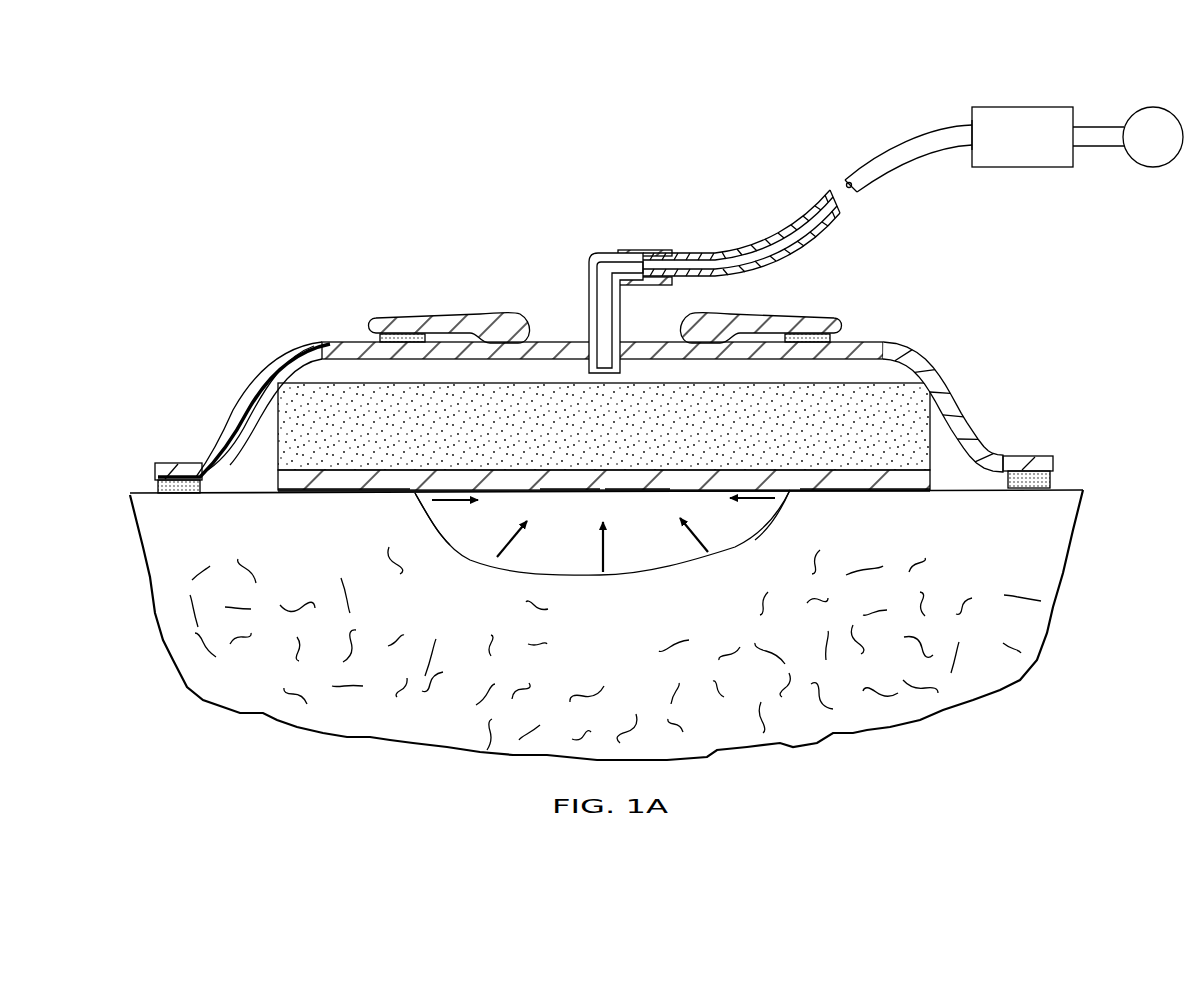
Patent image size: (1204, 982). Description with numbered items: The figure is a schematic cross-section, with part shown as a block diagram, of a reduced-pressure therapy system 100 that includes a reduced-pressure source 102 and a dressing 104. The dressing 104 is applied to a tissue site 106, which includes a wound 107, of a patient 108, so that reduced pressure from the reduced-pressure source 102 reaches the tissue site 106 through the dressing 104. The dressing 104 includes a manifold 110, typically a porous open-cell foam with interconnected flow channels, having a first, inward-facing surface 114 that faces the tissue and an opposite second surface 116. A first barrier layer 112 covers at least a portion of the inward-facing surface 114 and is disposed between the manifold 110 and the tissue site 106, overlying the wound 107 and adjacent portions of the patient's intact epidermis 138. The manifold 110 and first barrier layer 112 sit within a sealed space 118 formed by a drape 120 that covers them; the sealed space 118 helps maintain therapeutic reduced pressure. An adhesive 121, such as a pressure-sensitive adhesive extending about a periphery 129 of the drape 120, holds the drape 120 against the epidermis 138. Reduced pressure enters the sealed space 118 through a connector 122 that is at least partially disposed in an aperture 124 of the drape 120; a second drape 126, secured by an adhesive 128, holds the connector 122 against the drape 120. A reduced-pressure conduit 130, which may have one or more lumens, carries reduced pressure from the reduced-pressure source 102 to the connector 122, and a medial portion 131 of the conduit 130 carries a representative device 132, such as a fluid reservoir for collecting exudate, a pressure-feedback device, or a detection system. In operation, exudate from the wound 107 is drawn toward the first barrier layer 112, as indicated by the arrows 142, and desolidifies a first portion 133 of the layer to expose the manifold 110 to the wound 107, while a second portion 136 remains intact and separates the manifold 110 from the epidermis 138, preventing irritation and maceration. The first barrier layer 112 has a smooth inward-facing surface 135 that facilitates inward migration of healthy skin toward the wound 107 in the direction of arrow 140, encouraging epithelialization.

The reduced-pressure therapy system 100 is at (538, 136).
The reduced-pressure source 102 is at (1152, 107).
The dressing 104 is at (270, 292).
The tissue site 106 is at (589, 675).
The wound 107 is at (573, 582).
The patient 108 is at (1060, 490).
The manifold 110 is at (582, 430).
The first barrier layer 112 is at (278, 492).
The first, inward-facing surface 114 is at (350, 495).
The second surface 116 is at (292, 380).
The sealed space 118 is at (258, 418).
The drape 120 is at (955, 385).
The adhesive 121 is at (183, 493).
The connector 122 is at (602, 252).
The aperture 124 is at (632, 368).
The second drape 126 is at (432, 318).
The adhesive 128 is at (383, 336).
The periphery 129 is at (187, 467).
The reduced-pressure conduit 130 is at (912, 158).
The medial portion 131 is at (972, 122).
The device 132 is at (1006, 146).
The first portion 133 is at (640, 492).
The smooth inward-facing surface 135 is at (575, 492).
The second portion 136 is at (386, 492).
The epidermis 138 is at (318, 492).
The arrow 140 is at (445, 505).
The arrows 142 is at (512, 545).